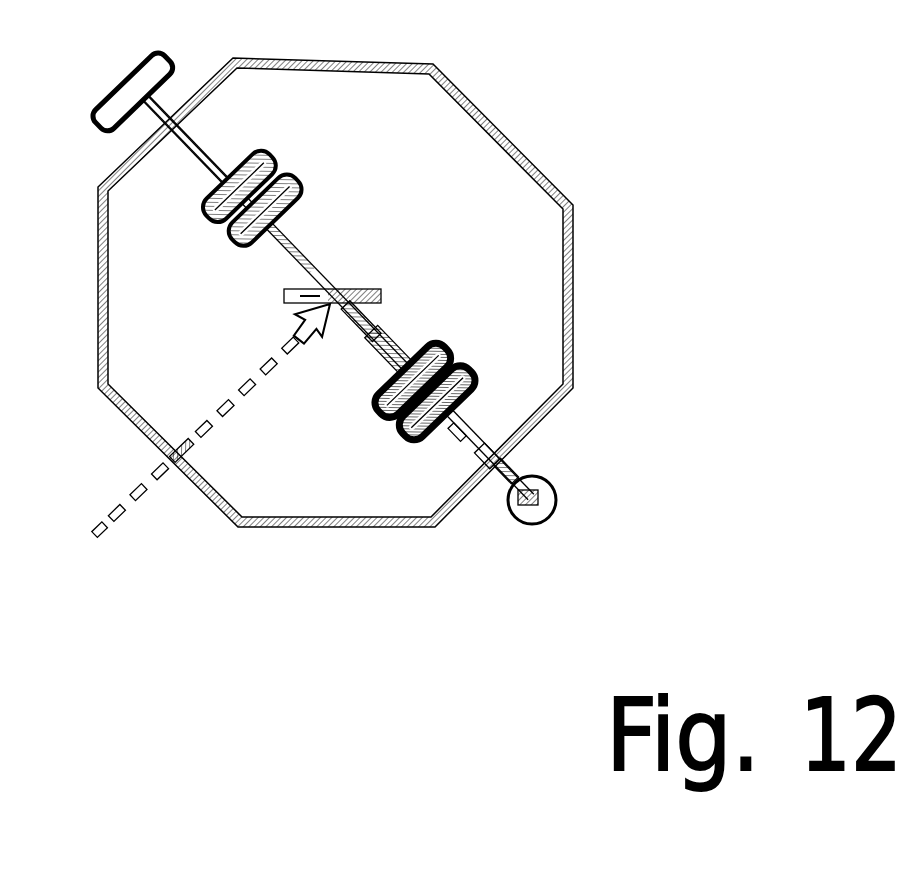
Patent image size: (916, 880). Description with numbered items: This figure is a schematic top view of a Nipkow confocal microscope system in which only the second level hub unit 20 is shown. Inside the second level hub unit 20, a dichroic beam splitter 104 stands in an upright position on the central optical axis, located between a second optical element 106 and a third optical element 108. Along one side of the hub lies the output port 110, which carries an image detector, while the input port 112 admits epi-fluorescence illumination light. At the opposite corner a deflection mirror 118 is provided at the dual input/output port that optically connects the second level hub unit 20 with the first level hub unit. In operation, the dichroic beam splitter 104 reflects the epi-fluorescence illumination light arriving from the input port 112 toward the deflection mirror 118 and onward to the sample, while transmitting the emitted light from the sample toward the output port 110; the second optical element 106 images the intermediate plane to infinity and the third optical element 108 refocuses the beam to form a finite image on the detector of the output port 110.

The second level hub unit 20 is at (465, 173).
The dichroic beam splitter 104 is at (333, 290).
The second optical element 106 is at (462, 352).
The third optical element 108 is at (297, 167).
The output port 110 is at (205, 170).
The input port 112 is at (133, 494).
The deflection mirror 118 is at (540, 512).